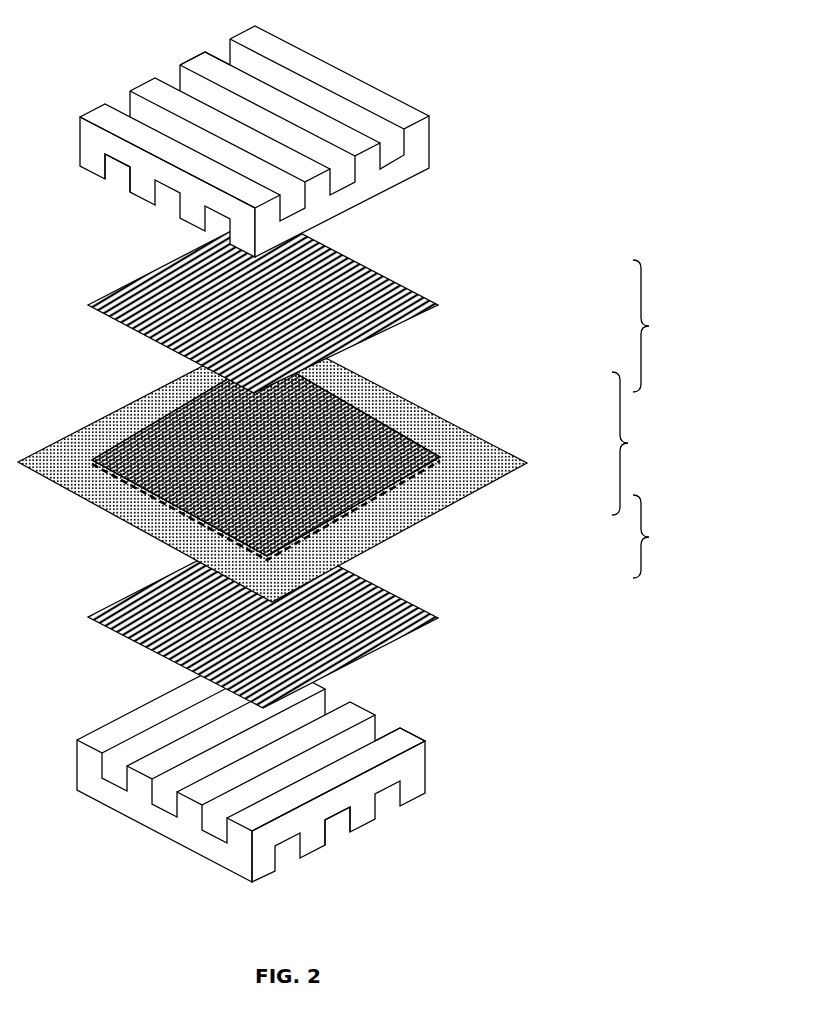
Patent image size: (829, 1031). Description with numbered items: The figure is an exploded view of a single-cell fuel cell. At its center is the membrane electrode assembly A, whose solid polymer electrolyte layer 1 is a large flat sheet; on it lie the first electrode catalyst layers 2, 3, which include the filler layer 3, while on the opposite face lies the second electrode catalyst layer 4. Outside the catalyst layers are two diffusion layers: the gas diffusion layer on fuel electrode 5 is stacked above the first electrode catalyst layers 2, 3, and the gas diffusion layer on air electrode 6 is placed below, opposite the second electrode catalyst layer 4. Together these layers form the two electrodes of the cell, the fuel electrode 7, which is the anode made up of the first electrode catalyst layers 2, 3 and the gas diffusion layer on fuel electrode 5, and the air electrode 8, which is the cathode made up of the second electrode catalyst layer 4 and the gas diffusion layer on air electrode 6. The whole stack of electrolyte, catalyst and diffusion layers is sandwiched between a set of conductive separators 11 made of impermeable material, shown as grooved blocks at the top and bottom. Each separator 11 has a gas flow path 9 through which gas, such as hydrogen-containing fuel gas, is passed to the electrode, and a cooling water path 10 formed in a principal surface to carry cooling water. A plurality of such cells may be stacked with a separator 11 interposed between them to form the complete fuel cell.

The solid polymer electrolyte layer 1 is at (518, 457).
The first electrode catalyst layer 2 is at (458, 422).
The filler layer 3 is at (458, 422).
The second electrode catalyst layer 4 is at (305, 535).
The gas diffusion layer on fuel electrode 5 is at (415, 302).
The gas diffusion layer on air electrode 6 is at (433, 612).
The fuel electrode 7 is at (657, 326).
The air electrode 8 is at (650, 536).
The gas flow path 9 is at (122, 182).
The cooling water path 10 is at (178, 68).
The separator 11 is at (308, 454).
The membrane electrode assembly A is at (636, 443).